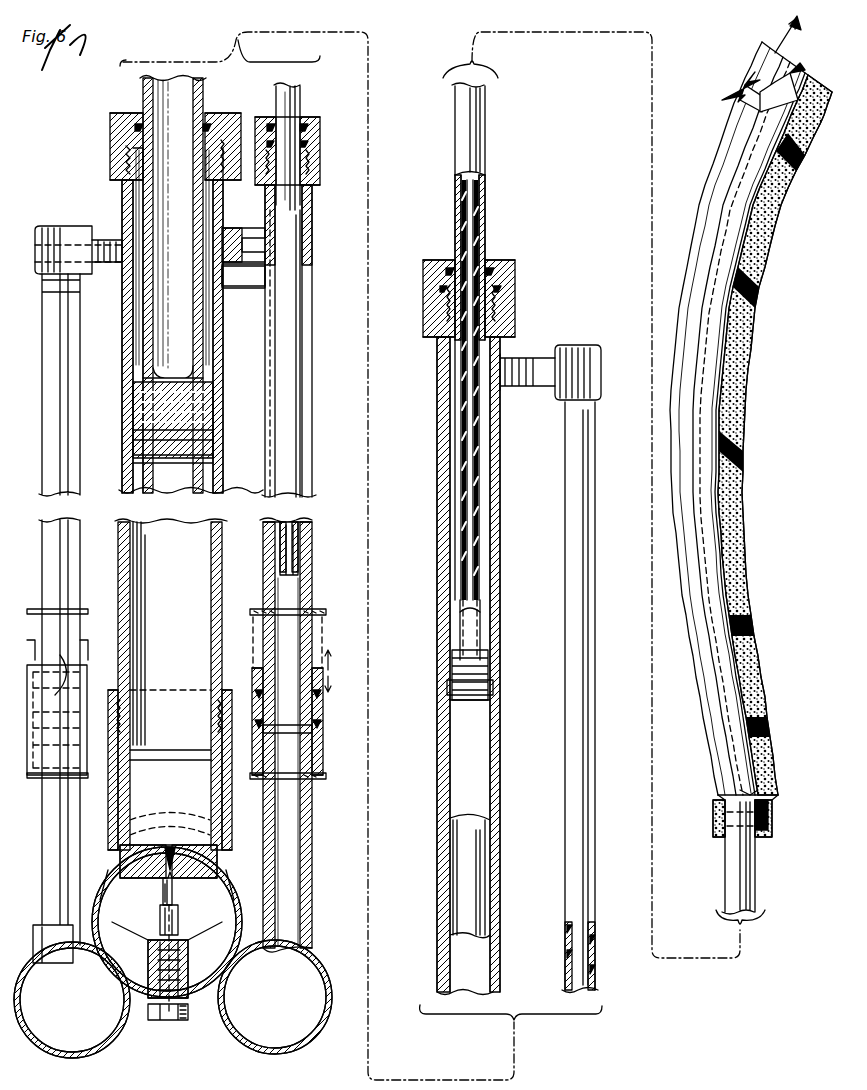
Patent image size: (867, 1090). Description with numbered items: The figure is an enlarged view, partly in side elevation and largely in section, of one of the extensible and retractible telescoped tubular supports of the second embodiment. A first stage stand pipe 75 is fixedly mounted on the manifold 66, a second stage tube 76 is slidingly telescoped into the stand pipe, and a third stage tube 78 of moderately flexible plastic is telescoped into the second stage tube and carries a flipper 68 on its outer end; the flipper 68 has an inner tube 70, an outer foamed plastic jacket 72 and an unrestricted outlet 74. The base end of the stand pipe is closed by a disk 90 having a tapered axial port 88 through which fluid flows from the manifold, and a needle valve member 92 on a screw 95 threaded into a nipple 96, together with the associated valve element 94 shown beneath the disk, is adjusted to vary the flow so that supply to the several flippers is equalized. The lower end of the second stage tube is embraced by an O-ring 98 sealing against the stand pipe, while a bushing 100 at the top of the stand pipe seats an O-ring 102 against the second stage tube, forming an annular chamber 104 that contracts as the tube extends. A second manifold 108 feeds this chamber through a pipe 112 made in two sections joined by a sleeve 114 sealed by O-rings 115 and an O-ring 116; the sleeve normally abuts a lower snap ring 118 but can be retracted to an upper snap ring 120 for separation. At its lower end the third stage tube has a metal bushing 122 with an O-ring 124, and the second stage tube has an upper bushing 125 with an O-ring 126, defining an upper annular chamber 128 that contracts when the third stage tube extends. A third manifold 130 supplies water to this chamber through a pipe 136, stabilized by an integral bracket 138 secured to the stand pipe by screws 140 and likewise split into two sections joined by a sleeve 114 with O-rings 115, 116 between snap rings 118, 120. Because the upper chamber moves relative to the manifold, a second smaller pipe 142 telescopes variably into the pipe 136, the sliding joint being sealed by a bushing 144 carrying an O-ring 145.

The manifold 66 is at (205, 980).
The flipper 68 is at (752, 298).
The inner tube 70 is at (782, 108).
The outer foamed plastic jacket 72 is at (780, 132).
The outlet 74 is at (779, 32).
The first stage stand pipe 75 is at (222, 548).
The second stage tube 76 is at (204, 102).
The third stage tube 78 is at (485, 164).
The tapered axial port 88 is at (170, 855).
The disk 90 is at (128, 878).
The needle valve member 92 is at (173, 892).
The valve body 94 is at (178, 940).
The screw 95 is at (165, 1020).
The nipple 96 is at (148, 955).
The O-ring 98 is at (172, 450).
The bushing 100 is at (112, 136).
The O-ring 102 is at (137, 123).
The annular chamber 104 is at (137, 330).
The manifold 108 is at (90, 1052).
The pipe 112 is at (110, 818).
The sleeve 114 is at (88, 700).
The O-rings 115 is at (52, 680).
The O-ring 116 is at (36, 755).
The lower snap ring 118 is at (78, 778).
The upper snap ring 120 is at (85, 608).
The metal bushing 122 is at (450, 716).
The O-ring 124 is at (493, 684).
The bushing 125 is at (512, 274).
The O-ring 126 is at (488, 268).
The upper annular chamber 128 is at (450, 450).
The third manifold 130 is at (265, 1042).
The pipe 136 is at (305, 240).
The integral bracket 138 is at (257, 270).
The screws 140 is at (247, 265).
The second smaller pipe 142 is at (300, 104).
The bushing 144 is at (320, 144).
The O-ring 145 is at (304, 128).